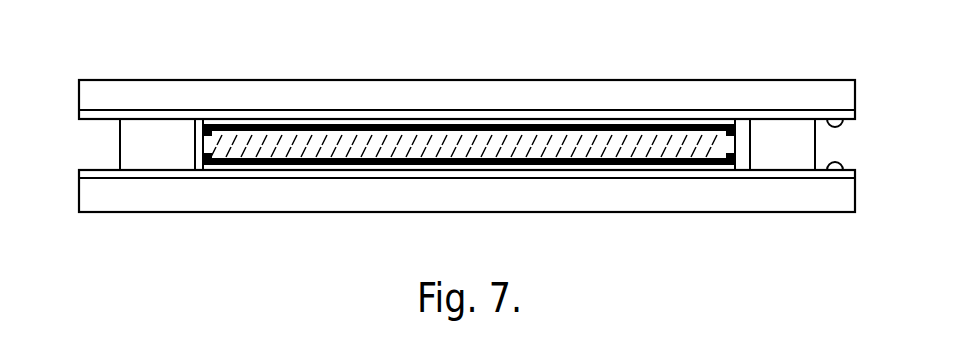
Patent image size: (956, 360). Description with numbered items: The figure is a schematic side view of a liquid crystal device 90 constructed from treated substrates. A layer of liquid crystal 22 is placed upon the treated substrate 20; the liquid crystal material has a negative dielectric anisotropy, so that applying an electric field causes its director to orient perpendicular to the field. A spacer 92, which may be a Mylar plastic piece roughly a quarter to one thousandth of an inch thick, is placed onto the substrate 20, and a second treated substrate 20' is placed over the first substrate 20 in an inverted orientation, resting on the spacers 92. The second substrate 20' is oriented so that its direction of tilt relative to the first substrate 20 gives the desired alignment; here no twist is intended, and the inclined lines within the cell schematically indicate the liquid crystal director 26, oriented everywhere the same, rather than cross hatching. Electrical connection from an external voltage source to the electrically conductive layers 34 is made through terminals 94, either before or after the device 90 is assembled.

The liquid crystal device 90 is at (91, 58).
The electrically conductive layer 34 is at (79, 115).
The spacer 92 is at (125, 150).
The treated substrate 20 is at (467, 212).
The second treated substrate 20' is at (469, 72).
The layer of liquid crystal 22 is at (250, 150).
The liquid crystal director 26 is at (422, 135).
The terminals 94 is at (841, 123).